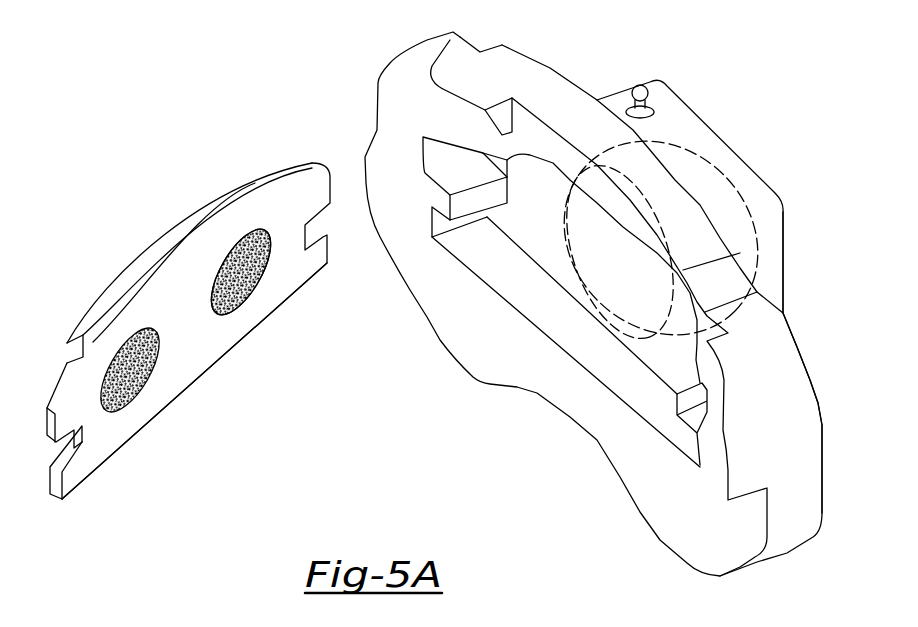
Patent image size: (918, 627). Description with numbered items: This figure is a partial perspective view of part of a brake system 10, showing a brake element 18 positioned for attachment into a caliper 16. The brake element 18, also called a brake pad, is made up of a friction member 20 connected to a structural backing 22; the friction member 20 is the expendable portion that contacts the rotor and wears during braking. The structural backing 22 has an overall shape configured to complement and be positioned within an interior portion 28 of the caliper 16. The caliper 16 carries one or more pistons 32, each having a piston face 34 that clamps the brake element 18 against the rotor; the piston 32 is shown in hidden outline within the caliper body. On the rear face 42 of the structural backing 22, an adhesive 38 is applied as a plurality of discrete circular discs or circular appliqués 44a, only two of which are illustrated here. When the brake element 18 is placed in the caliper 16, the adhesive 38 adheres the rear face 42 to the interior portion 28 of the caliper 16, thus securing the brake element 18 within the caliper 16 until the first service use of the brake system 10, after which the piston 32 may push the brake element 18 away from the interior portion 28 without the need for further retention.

The brake system 10 is at (505, 518).
The caliper 16 is at (780, 415).
The brake element 18 is at (126, 219).
The friction member 20 is at (102, 304).
The structural backing 22 is at (120, 437).
The interior portion 28 is at (537, 229).
The piston 32 is at (731, 177).
The piston face 34 is at (635, 308).
The adhesive 38 is at (257, 293).
The rear face 42 is at (195, 301).
The circular appliqués 44a is at (157, 360).